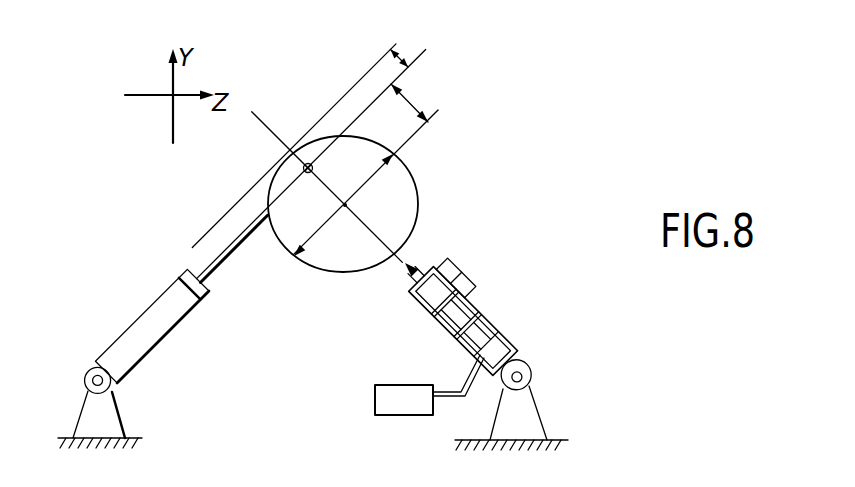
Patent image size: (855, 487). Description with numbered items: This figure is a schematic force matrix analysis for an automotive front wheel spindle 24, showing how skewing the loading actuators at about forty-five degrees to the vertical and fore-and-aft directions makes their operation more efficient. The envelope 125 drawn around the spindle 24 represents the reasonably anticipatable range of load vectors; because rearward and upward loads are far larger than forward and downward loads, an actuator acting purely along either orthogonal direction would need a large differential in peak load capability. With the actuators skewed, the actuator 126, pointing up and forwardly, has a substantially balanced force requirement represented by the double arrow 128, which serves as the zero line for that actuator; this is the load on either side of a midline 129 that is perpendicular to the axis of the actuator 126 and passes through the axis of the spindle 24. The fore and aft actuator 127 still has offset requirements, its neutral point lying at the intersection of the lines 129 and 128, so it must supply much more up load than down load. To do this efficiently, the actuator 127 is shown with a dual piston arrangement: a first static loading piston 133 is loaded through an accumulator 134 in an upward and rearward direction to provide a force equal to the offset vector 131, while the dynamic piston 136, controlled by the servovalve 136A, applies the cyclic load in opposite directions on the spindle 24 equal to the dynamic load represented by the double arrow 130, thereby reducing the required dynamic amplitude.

The spindle 24 is at (303, 168).
The force vector envelope 125 is at (404, 157).
The actuator 126 is at (174, 317).
The fore and aft actuator 127 is at (491, 318).
The double arrow 128 is at (314, 240).
The midline 129 is at (273, 134).
The double arrow 130 is at (401, 56).
The double arrow 131 is at (410, 102).
The static loading piston 133 is at (476, 356).
The accumulator 134 is at (419, 416).
The dynamic piston 136 is at (426, 311).
The servovalve 136A is at (462, 276).